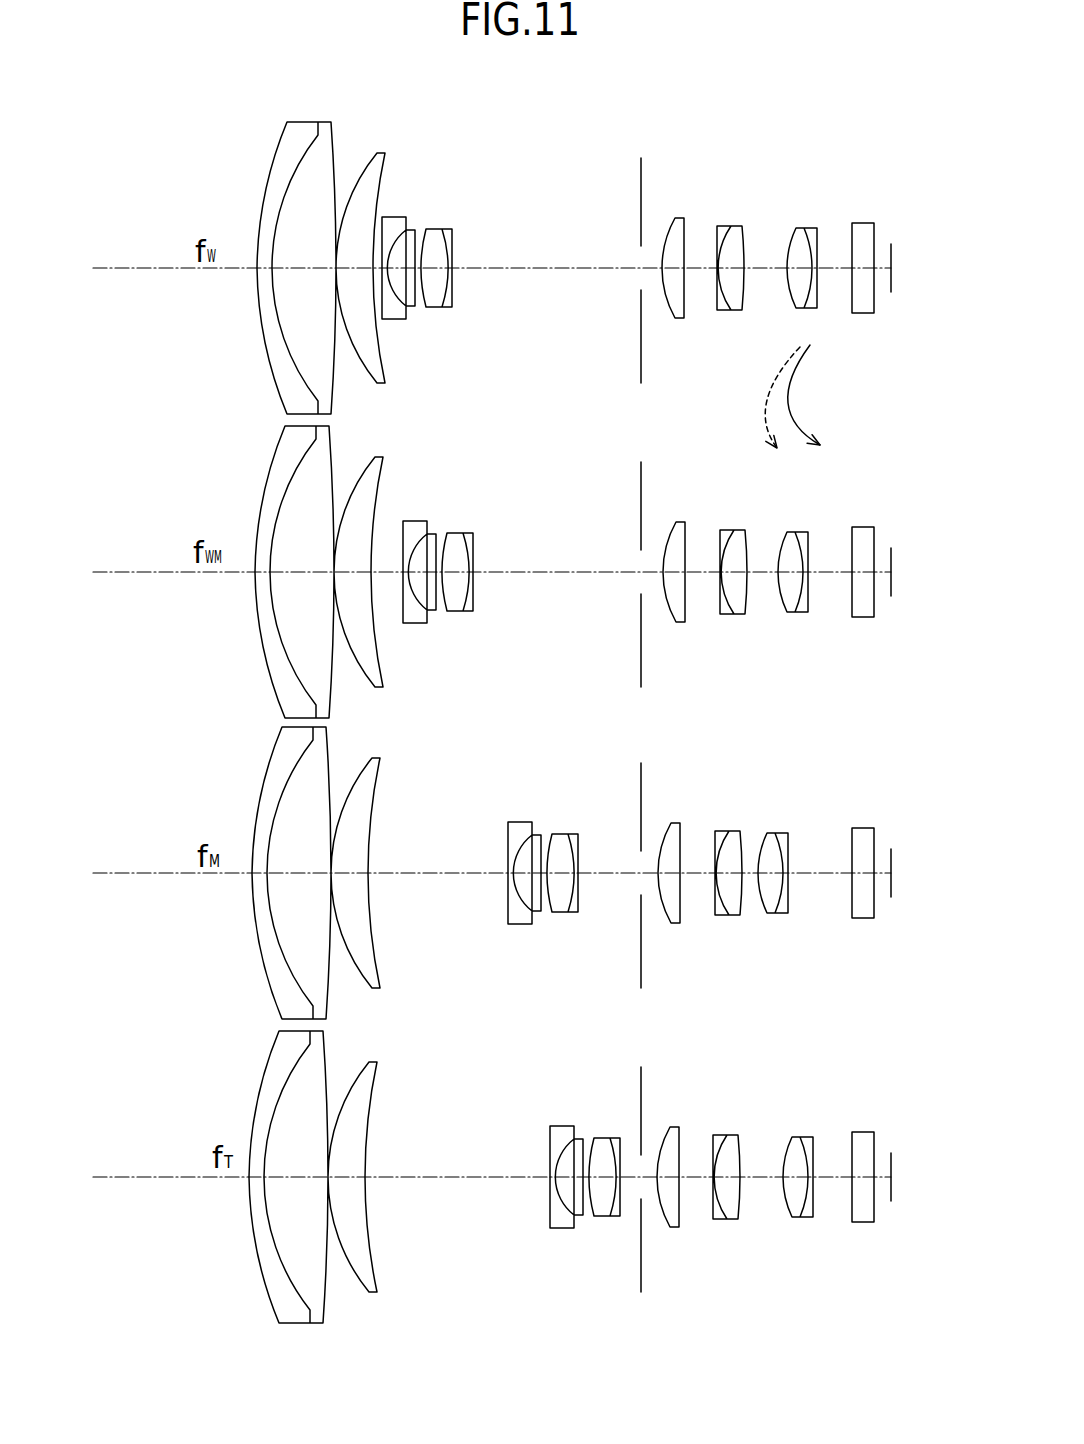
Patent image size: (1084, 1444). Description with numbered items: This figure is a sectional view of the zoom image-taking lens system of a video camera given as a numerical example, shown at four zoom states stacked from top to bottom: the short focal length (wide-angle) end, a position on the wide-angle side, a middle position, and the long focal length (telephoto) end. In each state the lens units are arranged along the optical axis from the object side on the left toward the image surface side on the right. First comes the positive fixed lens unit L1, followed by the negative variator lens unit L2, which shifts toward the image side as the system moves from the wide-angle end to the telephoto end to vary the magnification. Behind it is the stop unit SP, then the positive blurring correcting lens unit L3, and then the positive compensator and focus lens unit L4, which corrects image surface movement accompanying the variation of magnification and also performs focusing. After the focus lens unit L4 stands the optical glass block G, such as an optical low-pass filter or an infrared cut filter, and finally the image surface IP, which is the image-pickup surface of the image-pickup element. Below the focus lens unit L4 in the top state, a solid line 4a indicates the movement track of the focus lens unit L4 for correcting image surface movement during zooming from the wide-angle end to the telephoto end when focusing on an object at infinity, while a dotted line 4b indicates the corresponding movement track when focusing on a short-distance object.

The positive fixed lens unit L1 is at (411, 117).
The negative variator lens unit L2 is at (458, 214).
The positive blurring correcting lens unit L3 is at (757, 210).
The positive compensator and focus lens unit L4 is at (828, 317).
The stop unit SP is at (643, 193).
The optical glass block G is at (865, 223).
The image surface IP is at (892, 250).
The solid line 4a is at (795, 380).
The dotted line 4b is at (770, 392).